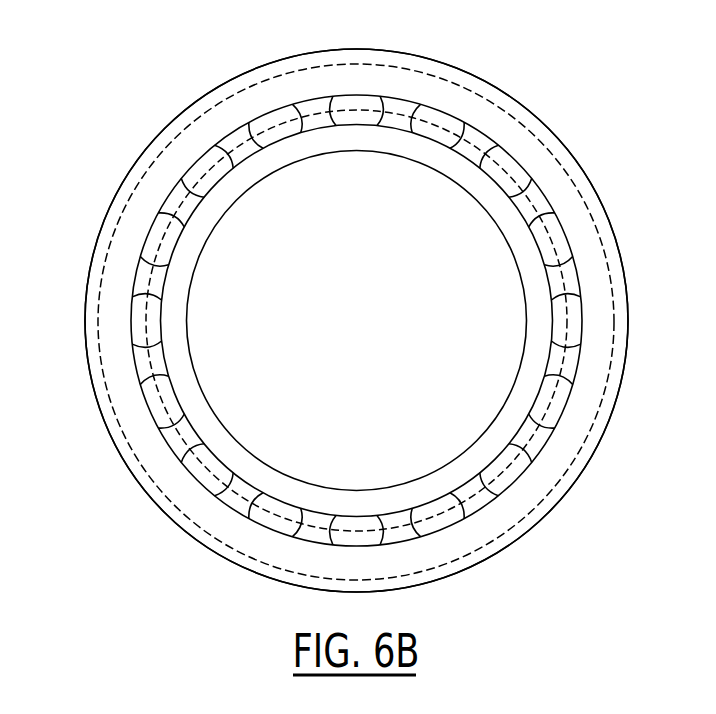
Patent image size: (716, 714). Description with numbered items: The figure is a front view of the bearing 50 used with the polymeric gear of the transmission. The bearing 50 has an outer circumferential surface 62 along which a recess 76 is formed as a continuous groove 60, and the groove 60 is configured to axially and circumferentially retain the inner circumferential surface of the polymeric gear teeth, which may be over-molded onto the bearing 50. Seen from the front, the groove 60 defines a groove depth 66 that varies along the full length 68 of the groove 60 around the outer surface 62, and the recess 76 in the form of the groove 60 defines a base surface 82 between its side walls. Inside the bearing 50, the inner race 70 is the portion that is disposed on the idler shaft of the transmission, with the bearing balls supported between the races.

The bearing 50 is at (589, 113).
The groove 60 is at (500, 98).
The recess 76 is at (356, 320).
The outer circumferential surface 62 is at (625, 273).
The groove depth 66 is at (330, 62).
The full length 68 is at (615, 408).
The inner race 70 is at (473, 195).
The base surface 82 is at (244, 92).